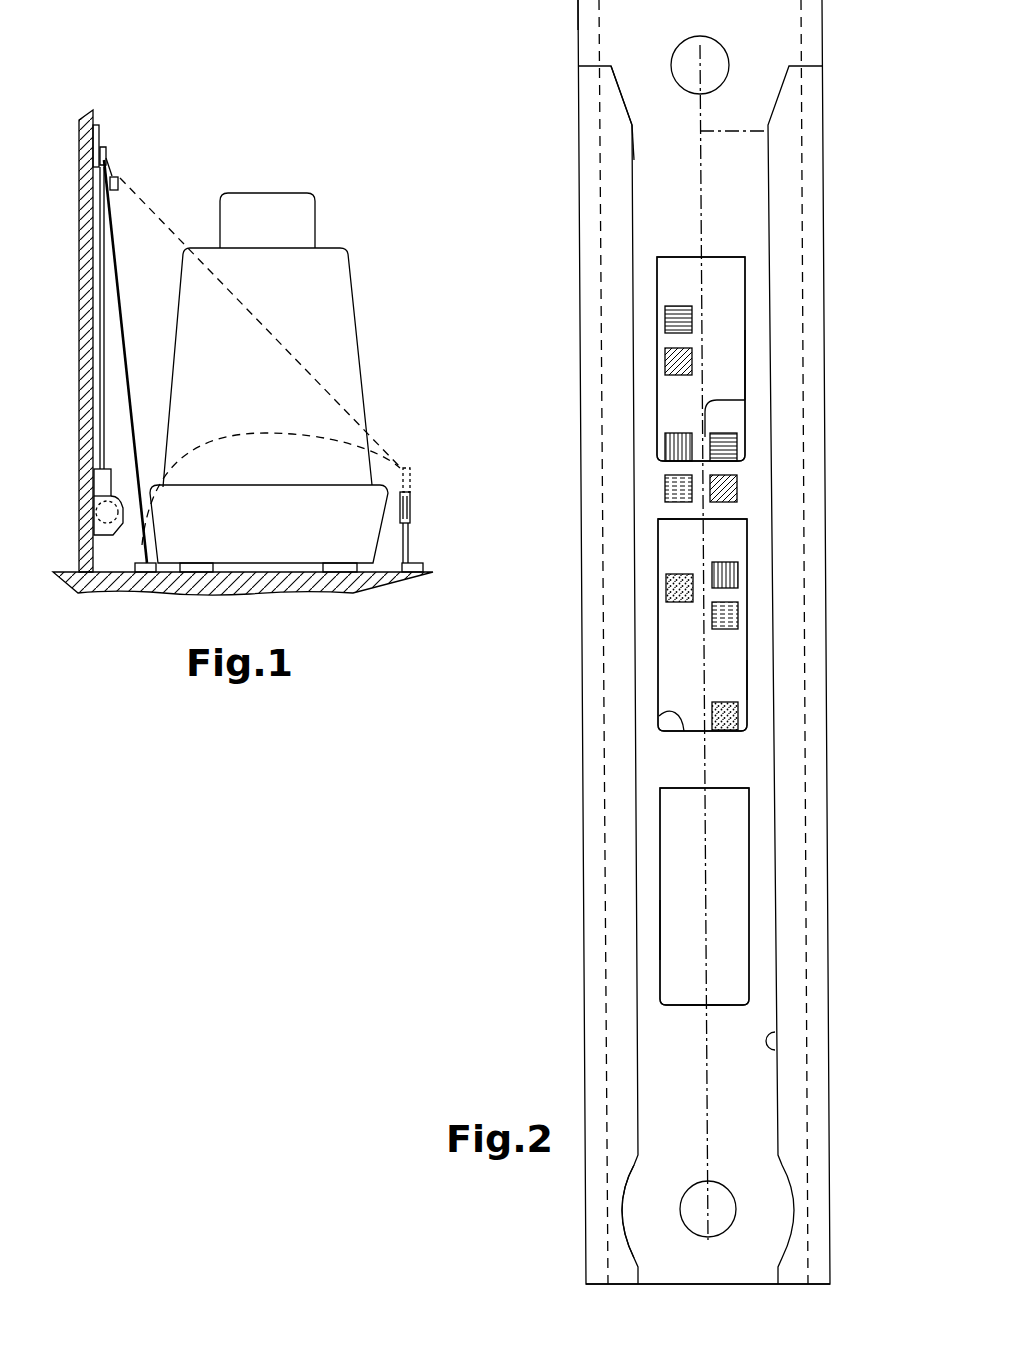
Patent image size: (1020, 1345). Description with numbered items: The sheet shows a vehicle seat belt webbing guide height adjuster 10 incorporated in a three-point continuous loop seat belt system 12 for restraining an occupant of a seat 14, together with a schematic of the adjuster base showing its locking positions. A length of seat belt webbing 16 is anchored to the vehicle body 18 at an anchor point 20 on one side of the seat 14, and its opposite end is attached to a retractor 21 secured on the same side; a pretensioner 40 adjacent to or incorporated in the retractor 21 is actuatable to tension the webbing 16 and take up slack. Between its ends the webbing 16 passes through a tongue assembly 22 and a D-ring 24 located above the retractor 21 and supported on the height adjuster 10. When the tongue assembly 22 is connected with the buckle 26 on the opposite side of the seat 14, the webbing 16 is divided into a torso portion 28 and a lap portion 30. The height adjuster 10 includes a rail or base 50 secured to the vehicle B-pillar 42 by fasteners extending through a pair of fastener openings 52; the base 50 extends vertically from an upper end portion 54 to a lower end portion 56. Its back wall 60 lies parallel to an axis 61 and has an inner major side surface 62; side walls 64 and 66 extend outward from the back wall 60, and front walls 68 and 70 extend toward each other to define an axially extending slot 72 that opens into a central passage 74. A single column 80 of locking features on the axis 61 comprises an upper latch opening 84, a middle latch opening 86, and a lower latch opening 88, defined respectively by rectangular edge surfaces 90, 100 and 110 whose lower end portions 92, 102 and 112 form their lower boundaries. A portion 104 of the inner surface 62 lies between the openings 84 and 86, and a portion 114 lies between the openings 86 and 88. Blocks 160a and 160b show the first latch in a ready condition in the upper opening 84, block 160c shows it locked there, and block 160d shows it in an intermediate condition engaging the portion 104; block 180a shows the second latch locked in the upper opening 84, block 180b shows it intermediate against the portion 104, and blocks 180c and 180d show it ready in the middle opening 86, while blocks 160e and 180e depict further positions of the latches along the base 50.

In FIG. 1, the seat belt webbing guide height adjuster 10 is at (112, 130).
In FIG. 2, the seat belt webbing guide height adjuster 10 is at (505, 1012).
In FIG. 1, the three-point continuous loop seat belt system 12 is at (358, 208).
In FIG. 1, the seat 14 is at (358, 250).
In FIG. 1, the seat belt webbing 16 is at (135, 350).
In FIG. 1, the vehicle body 18 is at (78, 584).
In FIG. 1, the anchor point 20 is at (150, 560).
In FIG. 1, the retractor 21 is at (110, 518).
In FIG. 1, the tongue assembly 22 is at (120, 178).
In FIG. 1, the D-ring 24 is at (107, 152).
In FIG. 1, the buckle 26 is at (411, 522).
In FIG. 1, the torso portion 28 is at (305, 367).
In FIG. 1, the lap portion 30 is at (283, 433).
In FIG. 1, the pretensioner 40 is at (100, 478).
In FIG. 1, the vehicle B-pillar 42 is at (80, 306).
In FIG. 2, the base 50 is at (572, 1060).
In FIG. 2, the fastener openings 52 is at (725, 50).
In FIG. 2, the upper end portion 54 is at (577, 24).
In FIG. 2, the lower end portion 56 is at (585, 1243).
In FIG. 2, the back wall 60 is at (660, 120).
In FIG. 2, the axis 61 is at (768, 128).
In FIG. 2, the inner major side surface 62 is at (660, 157).
In FIG. 2, the side wall 64 is at (588, 47).
In FIG. 2, the side wall 66 is at (808, 44).
In FIG. 2, the front wall 68 is at (622, 778).
In FIG. 2, the front wall 70 is at (783, 864).
In FIG. 2, the slot 72 is at (770, 1034).
In FIG. 2, the central passage 74 is at (747, 1102).
In FIG. 2, the column of locking features 80 is at (668, 230).
In FIG. 2, the upper latch opening 84 is at (752, 300).
In FIG. 2, the middle latch opening 86 is at (660, 650).
In FIG. 2, the lower latch opening 88 is at (660, 865).
In FIG. 2, the edge surface 90 is at (746, 357).
In FIG. 2, the lower end portion 92 is at (720, 400).
In FIG. 2, the edge surface 100 is at (748, 678).
In FIG. 2, the lower end portion 102 is at (672, 713).
In FIG. 2, the portion of inner major side surface 104 is at (677, 513).
In FIG. 2, the edge surface 110 is at (662, 928).
In FIG. 2, the lower end portion 112 is at (705, 1000).
In FIG. 2, the portion of inner major side surface 114 is at (728, 768).
In FIG. 2, the block representing first latch 160a is at (677, 320).
In FIG. 2, the block representing first latch 160b is at (677, 362).
In FIG. 2, the block representing first latch 160c is at (680, 448).
In FIG. 2, the block representing first latch 160d is at (677, 490).
In FIG. 2, the fifth sensor 160e is at (680, 595).
In FIG. 2, the block representing second latch 180a is at (737, 445).
In FIG. 2, the block representing second latch 180b is at (725, 488).
In FIG. 2, the block representing second latch 180c is at (738, 575).
In FIG. 2, the block representing second latch 180d is at (738, 614).
In FIG. 2, the fifth reference sensor 180e is at (738, 717).